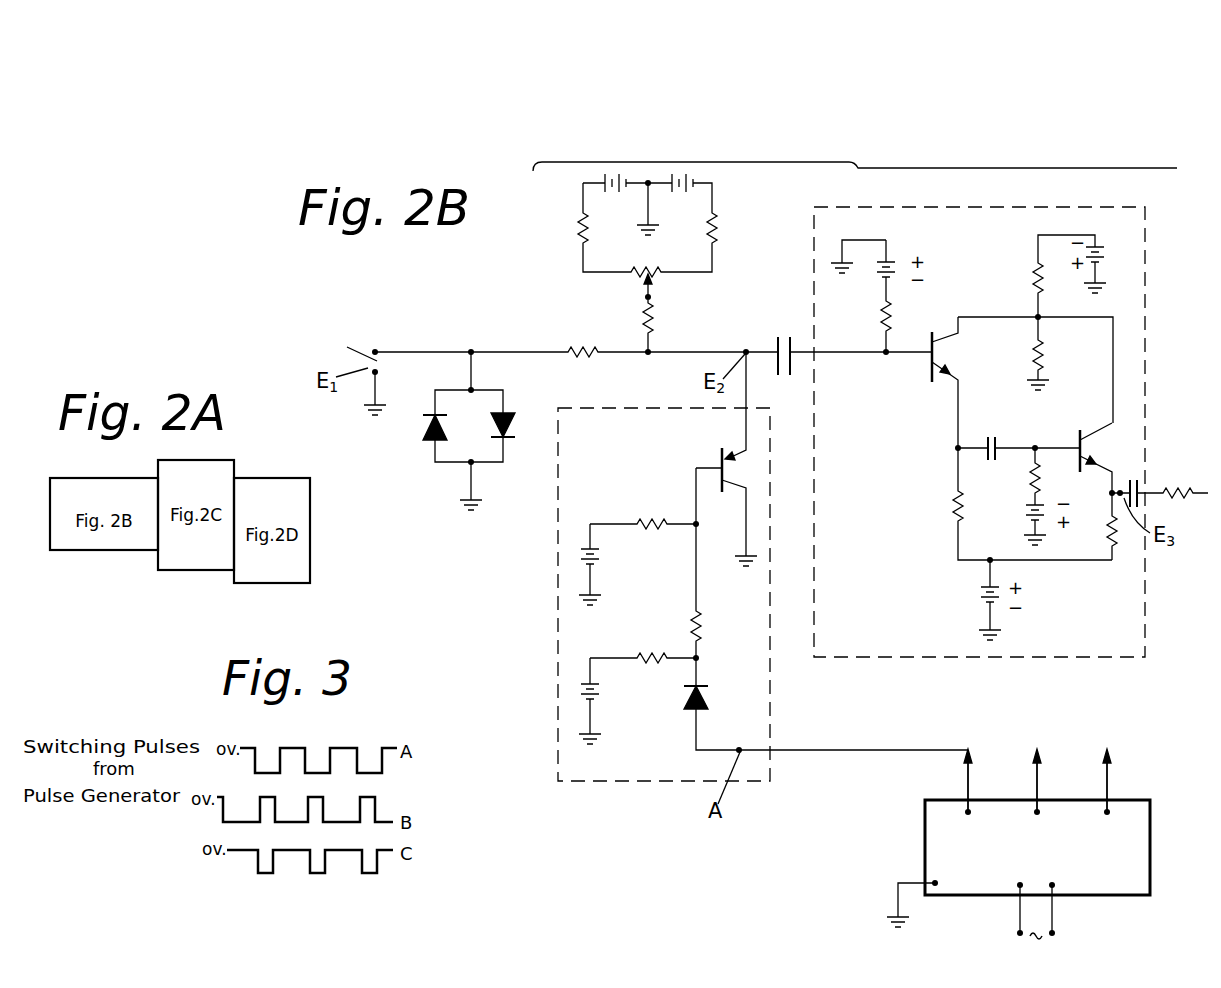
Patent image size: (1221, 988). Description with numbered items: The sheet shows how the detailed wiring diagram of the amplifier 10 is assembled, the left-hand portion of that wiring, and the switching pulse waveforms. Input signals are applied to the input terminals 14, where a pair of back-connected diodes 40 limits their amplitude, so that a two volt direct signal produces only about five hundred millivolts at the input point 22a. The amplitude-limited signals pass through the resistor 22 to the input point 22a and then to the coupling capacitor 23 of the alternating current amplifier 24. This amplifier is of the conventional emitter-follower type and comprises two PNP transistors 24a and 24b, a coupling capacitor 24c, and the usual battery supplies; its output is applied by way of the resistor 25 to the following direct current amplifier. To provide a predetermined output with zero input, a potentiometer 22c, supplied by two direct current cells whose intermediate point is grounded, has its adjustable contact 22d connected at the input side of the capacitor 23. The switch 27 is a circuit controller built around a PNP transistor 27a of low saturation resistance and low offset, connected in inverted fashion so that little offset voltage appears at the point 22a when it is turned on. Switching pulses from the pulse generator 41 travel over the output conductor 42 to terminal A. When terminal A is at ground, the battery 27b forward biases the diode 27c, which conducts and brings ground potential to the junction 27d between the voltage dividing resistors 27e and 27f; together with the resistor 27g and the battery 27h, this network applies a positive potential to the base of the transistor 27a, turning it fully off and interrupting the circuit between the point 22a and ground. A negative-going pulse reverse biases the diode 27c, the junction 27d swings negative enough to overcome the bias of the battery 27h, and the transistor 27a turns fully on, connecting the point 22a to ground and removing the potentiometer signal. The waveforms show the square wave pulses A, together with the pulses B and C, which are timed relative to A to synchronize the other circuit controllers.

In FIG. 2B, the amplifier 10 is at (855, 183).
In FIG. 2B, the input terminals 14 is at (358, 369).
In FIG. 2B, the resistor 22 is at (584, 363).
In FIG. 2B, the input point 22a is at (745, 352).
In FIG. 2B, the potentiometer 22c is at (546, 250).
In FIG. 2B, the adjustable contact 22d is at (657, 298).
In FIG. 2B, the coupling capacitor 23 is at (780, 336).
In FIG. 2B, the alternating current amplifier 24 is at (814, 231).
In FIG. 2B, the transistor 24a is at (926, 371).
In FIG. 2B, the transistor 24b is at (1071, 451).
In FIG. 2B, the coupling capacitor 24c is at (991, 435).
In FIG. 2B, the resistor 25 is at (1171, 482).
In FIG. 2B, the switch 27 is at (553, 630).
In FIG. 2B, the transistor 27a is at (719, 459).
In FIG. 2B, the battery 27b is at (608, 693).
In FIG. 2B, the diode 27c is at (737, 700).
In FIG. 2B, the junction 27d is at (702, 658).
In FIG. 2B, the resistor 27e is at (695, 615).
In FIG. 2B, the resistor 27f is at (636, 656).
In FIG. 2B, the resistor 27g is at (636, 515).
In FIG. 2B, the battery 27h is at (600, 560).
In FIG. 2B, the back-connected diodes 40 is at (461, 399).
In FIG. 2B, the pulse generator 41 is at (925, 810).
In FIG. 3, the pulse generator 41 is at (121, 837).
In FIG. 2B, the output conductor 42 is at (848, 752).